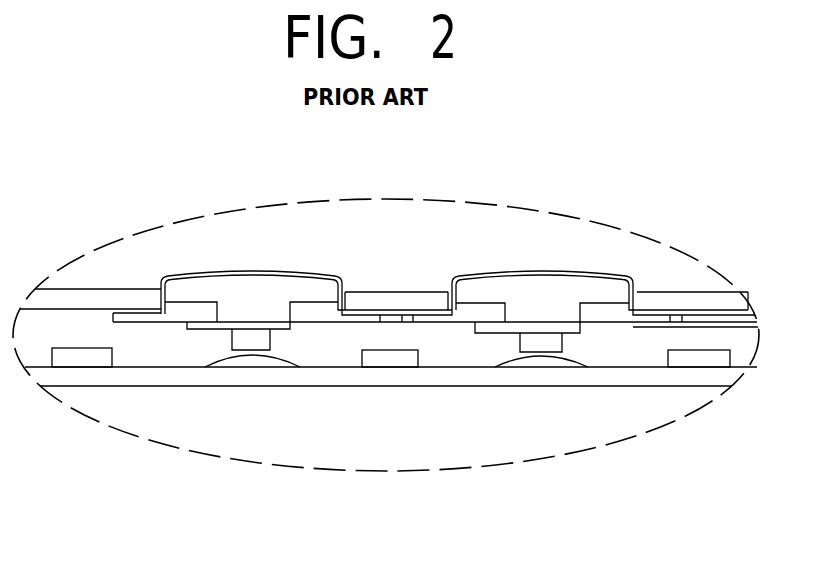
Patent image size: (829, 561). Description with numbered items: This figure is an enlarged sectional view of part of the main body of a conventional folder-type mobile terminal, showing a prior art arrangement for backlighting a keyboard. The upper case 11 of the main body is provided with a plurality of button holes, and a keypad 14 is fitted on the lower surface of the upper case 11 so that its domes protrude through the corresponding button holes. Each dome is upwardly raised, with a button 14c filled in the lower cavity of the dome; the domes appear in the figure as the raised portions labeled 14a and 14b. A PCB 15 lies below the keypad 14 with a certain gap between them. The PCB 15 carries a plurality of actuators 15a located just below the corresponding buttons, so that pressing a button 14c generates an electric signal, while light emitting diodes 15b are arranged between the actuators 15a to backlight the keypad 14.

The upper case 11 is at (92, 297).
The keypad 14 is at (553, 266).
The first thin film transistor 14a is at (210, 267).
The dome 14b is at (495, 268).
The button 14c is at (258, 302).
The PCB 15 is at (137, 372).
The actuator 15a is at (253, 362).
The light emitting diode 15b is at (388, 358).